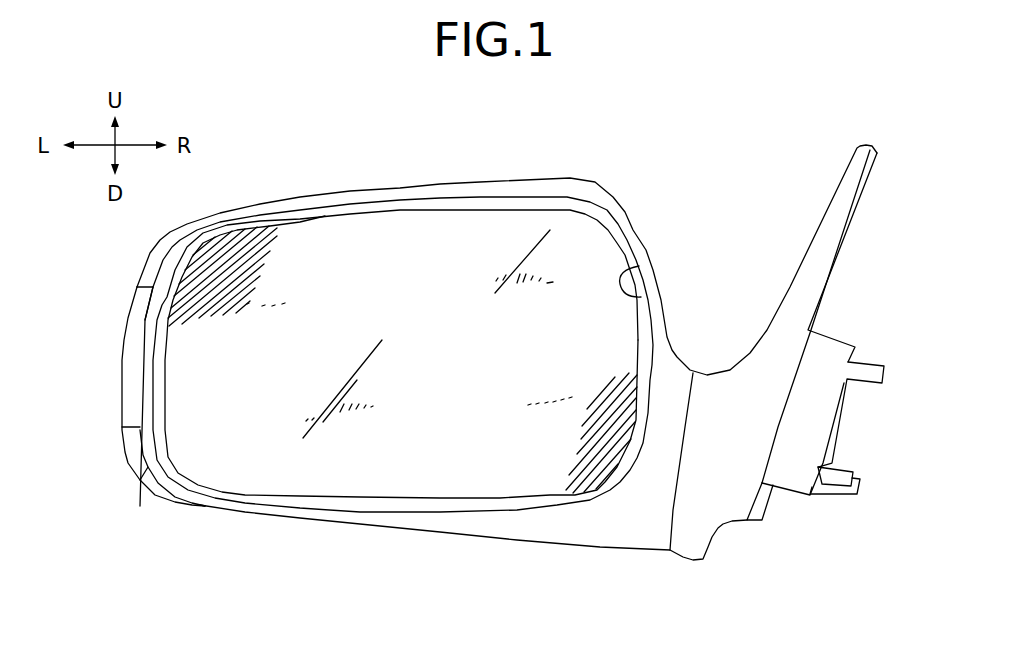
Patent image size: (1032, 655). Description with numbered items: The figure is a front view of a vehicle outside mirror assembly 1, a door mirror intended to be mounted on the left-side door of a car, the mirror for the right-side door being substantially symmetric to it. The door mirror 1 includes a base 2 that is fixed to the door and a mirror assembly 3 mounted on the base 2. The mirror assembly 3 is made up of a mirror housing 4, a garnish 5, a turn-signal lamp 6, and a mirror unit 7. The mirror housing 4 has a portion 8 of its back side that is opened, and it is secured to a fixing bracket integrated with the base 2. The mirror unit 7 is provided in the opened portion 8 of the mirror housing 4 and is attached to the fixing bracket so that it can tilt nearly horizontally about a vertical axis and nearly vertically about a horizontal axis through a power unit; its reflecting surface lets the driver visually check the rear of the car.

The vehicle outside mirror assembly 1 is at (715, 190).
The base 2 is at (845, 267).
The mirror assembly 3 is at (483, 177).
The mirror housing 4 is at (524, 525).
The garnish 5 is at (572, 178).
The turn-signal lamp 6 is at (122, 355).
The mirror unit 7 is at (391, 231).
The opened portion of back side 8 is at (631, 267).